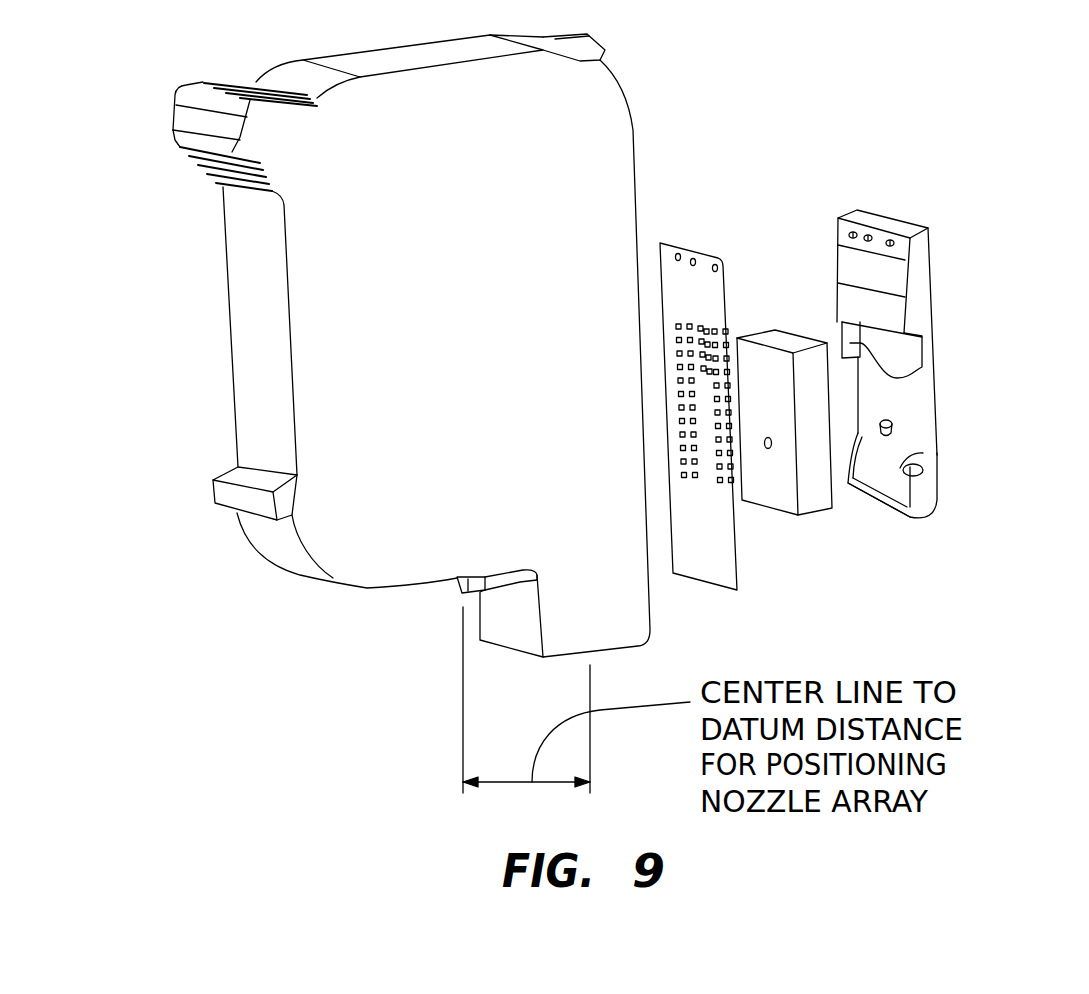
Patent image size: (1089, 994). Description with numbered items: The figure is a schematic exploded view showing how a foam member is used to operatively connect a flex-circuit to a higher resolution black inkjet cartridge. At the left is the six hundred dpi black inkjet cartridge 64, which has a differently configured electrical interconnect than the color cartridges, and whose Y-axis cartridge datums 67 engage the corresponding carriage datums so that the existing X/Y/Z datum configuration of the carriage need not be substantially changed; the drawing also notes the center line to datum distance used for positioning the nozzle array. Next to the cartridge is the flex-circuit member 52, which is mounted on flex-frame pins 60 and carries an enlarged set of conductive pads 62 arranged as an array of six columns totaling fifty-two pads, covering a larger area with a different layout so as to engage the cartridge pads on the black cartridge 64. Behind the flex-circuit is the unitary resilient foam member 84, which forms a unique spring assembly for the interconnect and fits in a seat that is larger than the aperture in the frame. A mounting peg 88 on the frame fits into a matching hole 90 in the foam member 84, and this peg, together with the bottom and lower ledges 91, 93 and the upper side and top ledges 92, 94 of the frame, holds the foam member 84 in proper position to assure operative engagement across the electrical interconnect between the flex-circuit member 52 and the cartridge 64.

The 600 dpi black inkjet cartridge 64 is at (411, 345).
The Y-axis cartridge datums 67 is at (458, 588).
The flex-circuit member 52 is at (702, 237).
The enlarged set of conductive pads 62 is at (707, 490).
The unitary resilient foam member 84 is at (768, 310).
The matching hole 90 is at (770, 448).
The flex-frame pins 60 is at (891, 240).
The top ledge 94 is at (932, 342).
The upper side ledge 92 is at (922, 366).
The mounting peg 88 is at (897, 421).
The lower ledge 93 is at (923, 453).
The bottom ledge 91 is at (880, 497).